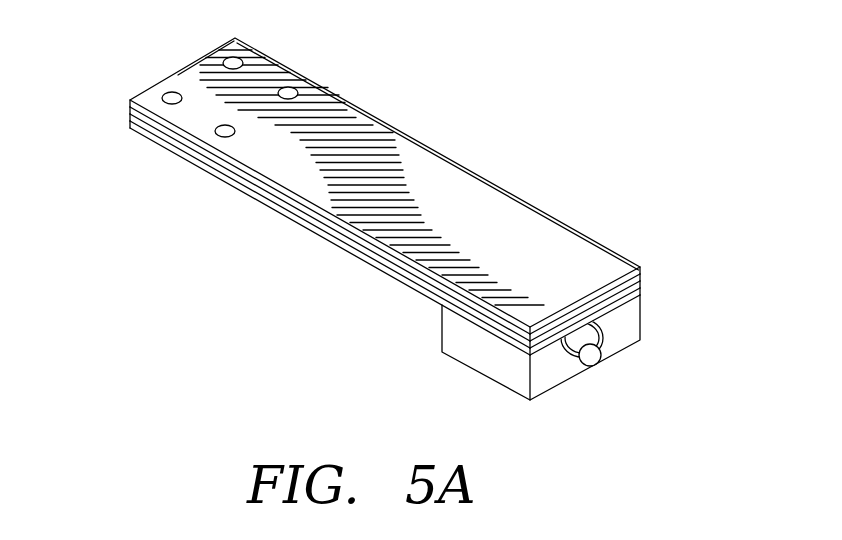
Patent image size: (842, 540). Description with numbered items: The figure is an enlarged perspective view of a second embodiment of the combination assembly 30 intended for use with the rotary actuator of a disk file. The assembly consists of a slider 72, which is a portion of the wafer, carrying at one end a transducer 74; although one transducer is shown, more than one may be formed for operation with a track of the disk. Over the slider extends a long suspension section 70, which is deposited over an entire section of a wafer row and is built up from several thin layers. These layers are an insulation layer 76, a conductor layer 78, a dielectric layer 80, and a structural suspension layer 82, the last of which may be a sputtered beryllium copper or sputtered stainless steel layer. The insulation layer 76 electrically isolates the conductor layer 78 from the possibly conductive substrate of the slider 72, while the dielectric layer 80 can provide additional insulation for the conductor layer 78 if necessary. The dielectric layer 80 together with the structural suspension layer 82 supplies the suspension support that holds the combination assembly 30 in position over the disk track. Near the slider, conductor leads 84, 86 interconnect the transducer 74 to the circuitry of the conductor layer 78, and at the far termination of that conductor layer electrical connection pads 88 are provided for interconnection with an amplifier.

The combination assembly 30 is at (475, 226).
The suspension section 70 is at (372, 130).
The slider 72 is at (505, 372).
The transducer 74 is at (585, 362).
The insulation layer 76 is at (147, 135).
The conductor layer 78 is at (130, 121).
The dielectric layer 80 is at (130, 109).
The structural suspension layer 82 is at (130, 100).
The conductor lead 84 is at (566, 362).
The conductor lead 86 is at (605, 336).
The electrical connection pads 88 is at (224, 56).